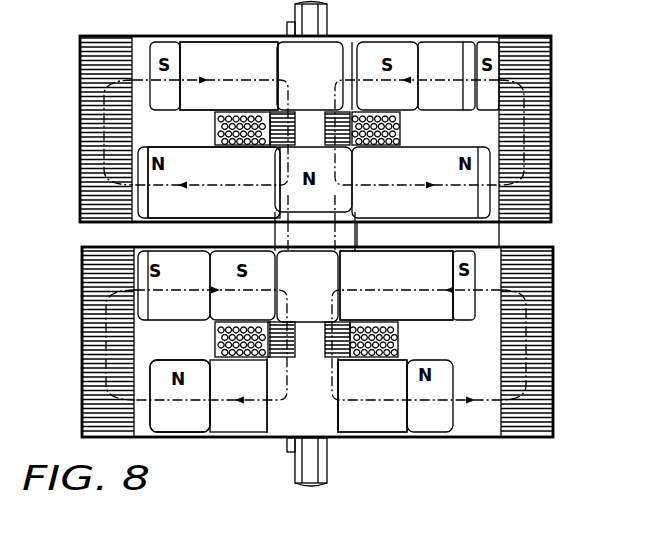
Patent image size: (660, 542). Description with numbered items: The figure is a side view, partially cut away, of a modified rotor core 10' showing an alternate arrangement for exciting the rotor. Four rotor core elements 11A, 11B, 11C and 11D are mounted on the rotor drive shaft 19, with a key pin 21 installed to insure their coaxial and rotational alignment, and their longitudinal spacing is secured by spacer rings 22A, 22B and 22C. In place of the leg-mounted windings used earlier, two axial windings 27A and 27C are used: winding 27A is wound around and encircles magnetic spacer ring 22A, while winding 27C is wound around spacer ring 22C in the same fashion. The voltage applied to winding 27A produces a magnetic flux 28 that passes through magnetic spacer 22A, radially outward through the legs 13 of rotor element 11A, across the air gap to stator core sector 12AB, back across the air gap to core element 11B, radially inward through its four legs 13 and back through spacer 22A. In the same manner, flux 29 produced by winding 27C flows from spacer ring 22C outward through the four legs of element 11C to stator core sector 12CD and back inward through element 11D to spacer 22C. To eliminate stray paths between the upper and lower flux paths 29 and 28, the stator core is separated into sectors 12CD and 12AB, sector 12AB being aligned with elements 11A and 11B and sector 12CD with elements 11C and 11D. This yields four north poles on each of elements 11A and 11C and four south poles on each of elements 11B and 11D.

The rotor core 10' is at (354, 223).
The rotor core element 11A is at (233, 416).
The rotor core element 11B is at (420, 267).
The rotor core element 11C is at (203, 199).
The rotor core element 11D is at (221, 50).
The stator core sector 12AB is at (576, 327).
The stator core sector 12CD is at (553, 123).
The legs 13 is at (387, 416).
The rotor drive shaft 19 is at (334, 23).
The key pin 21 is at (287, 28).
The magnetic spacer ring 22A is at (314, 322).
The spacer ring 22B is at (347, 237).
The magnetic spacer ring 22C is at (316, 116).
The axial winding 27A is at (399, 343).
The axial winding 27C is at (402, 128).
The magnetic flux 28 is at (172, 266).
The magnetic flux 29 is at (261, 62).